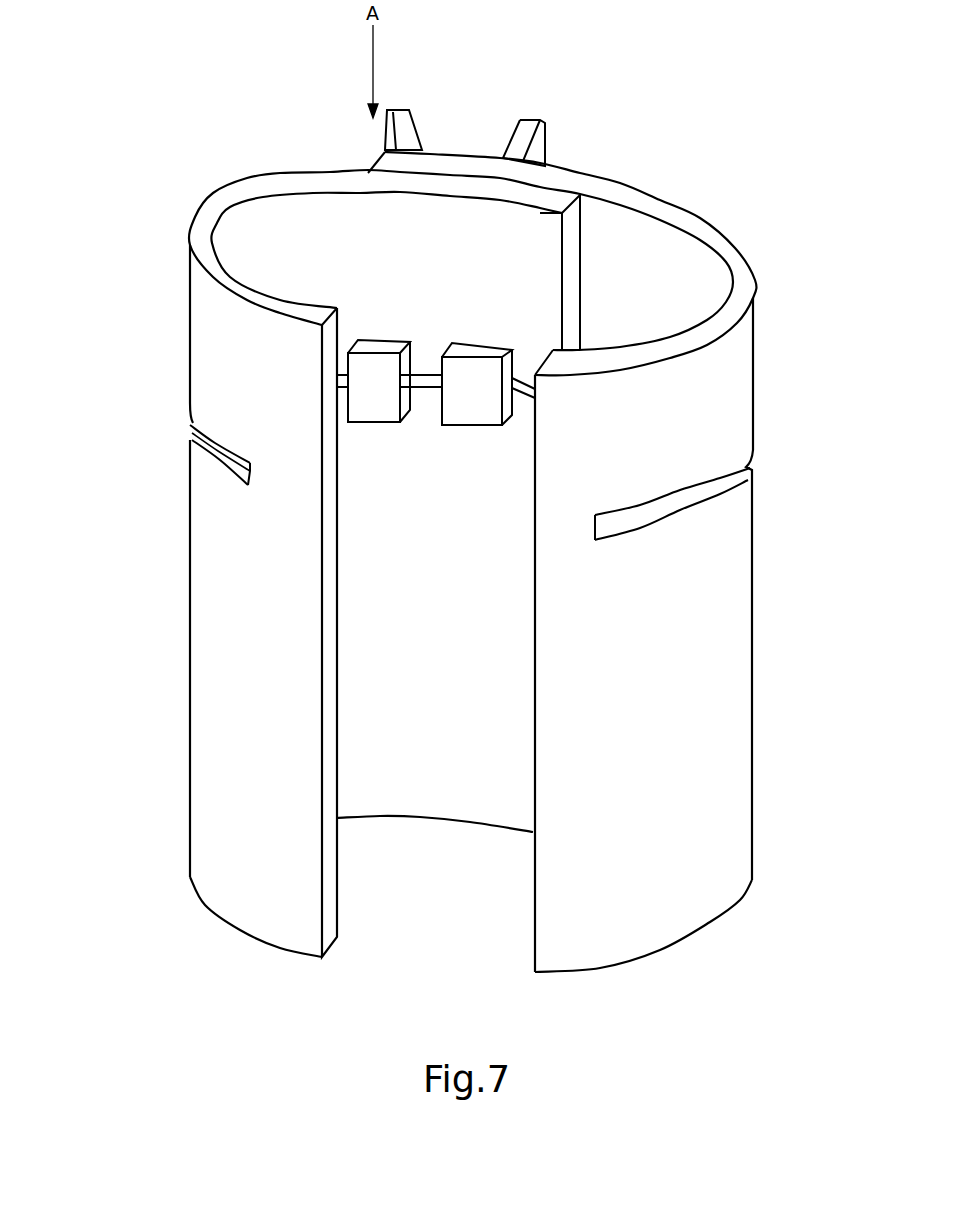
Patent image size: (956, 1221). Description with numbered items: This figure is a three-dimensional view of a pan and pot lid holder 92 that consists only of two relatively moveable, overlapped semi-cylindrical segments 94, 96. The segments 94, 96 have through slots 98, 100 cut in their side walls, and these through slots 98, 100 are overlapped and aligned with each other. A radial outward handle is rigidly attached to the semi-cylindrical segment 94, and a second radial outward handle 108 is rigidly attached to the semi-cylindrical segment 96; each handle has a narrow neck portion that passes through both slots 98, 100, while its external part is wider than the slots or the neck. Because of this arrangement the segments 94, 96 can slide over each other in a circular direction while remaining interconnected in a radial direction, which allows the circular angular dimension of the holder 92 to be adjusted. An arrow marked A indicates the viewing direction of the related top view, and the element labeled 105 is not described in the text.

The pan and pot lid holder 92 is at (446, 488).
The semi-cylindrical segment 94 is at (640, 183).
The semi-cylindrical segment 96 is at (192, 601).
The through slot 98 is at (670, 515).
The through slot 100 is at (230, 465).
The first lug 105 is at (385, 148).
The radial outward handle 108 is at (548, 128).